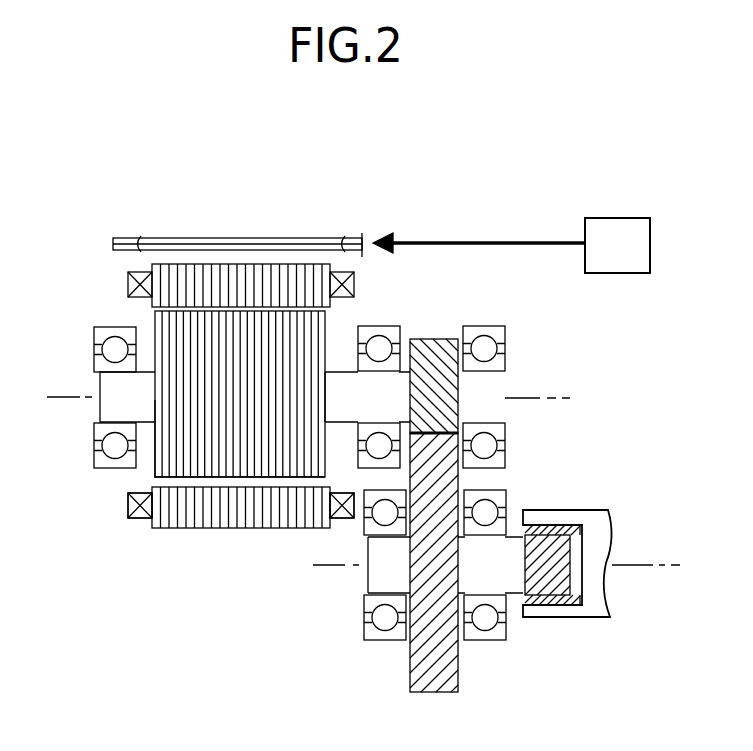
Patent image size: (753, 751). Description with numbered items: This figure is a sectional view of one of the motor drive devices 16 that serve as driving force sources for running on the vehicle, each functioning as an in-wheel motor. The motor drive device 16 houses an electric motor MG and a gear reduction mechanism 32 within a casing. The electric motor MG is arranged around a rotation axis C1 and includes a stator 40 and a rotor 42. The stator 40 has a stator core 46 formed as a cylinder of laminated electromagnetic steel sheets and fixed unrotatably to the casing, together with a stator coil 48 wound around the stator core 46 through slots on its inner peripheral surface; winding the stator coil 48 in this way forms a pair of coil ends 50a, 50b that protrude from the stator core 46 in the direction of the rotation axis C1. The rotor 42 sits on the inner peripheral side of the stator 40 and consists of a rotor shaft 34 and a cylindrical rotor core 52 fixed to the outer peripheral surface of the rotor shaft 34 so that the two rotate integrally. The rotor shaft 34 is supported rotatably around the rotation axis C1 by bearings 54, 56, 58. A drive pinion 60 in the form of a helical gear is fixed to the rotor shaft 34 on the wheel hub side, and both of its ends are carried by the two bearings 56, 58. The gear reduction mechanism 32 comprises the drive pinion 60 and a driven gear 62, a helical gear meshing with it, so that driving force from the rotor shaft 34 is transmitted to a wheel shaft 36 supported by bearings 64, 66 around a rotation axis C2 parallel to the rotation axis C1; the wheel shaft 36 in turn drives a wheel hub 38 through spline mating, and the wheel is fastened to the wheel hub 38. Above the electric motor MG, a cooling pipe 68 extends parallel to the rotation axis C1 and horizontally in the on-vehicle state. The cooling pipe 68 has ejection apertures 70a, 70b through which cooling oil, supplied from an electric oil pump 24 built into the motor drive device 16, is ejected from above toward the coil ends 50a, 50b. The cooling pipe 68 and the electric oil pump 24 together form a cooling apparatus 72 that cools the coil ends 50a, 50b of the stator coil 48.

The motor drive device 16 is at (357, 157).
The electric motor MG is at (100, 248).
The cooling apparatus 72 is at (388, 192).
The electric oil pump 24 is at (618, 258).
The cooling pipe 68 is at (250, 230).
The ejection aperture 70a is at (141, 235).
The ejection aperture 70b is at (343, 235).
The rotor shaft 34 is at (108, 383).
The rotation axis C1 is at (551, 398).
The rotor 42 is at (150, 320).
The rotor core 52 is at (165, 458).
The stator 40 is at (204, 423).
The stator core 46 is at (215, 515).
The stator coil 48 is at (124, 512).
The coil end 50a is at (143, 521).
The coil end 50b is at (341, 519).
The bearing 54 is at (96, 460).
The bearing 56 is at (373, 326).
The bearing 58 is at (505, 326).
The drive pinion 60 is at (430, 360).
The driven gear 62 is at (455, 690).
The gear reduction mechanism 32 is at (398, 685).
The wheel shaft 36 is at (373, 580).
The rotation axis C2 is at (660, 565).
The bearing 64 is at (370, 635).
The bearing 66 is at (505, 638).
The wheel hub 38 is at (608, 520).